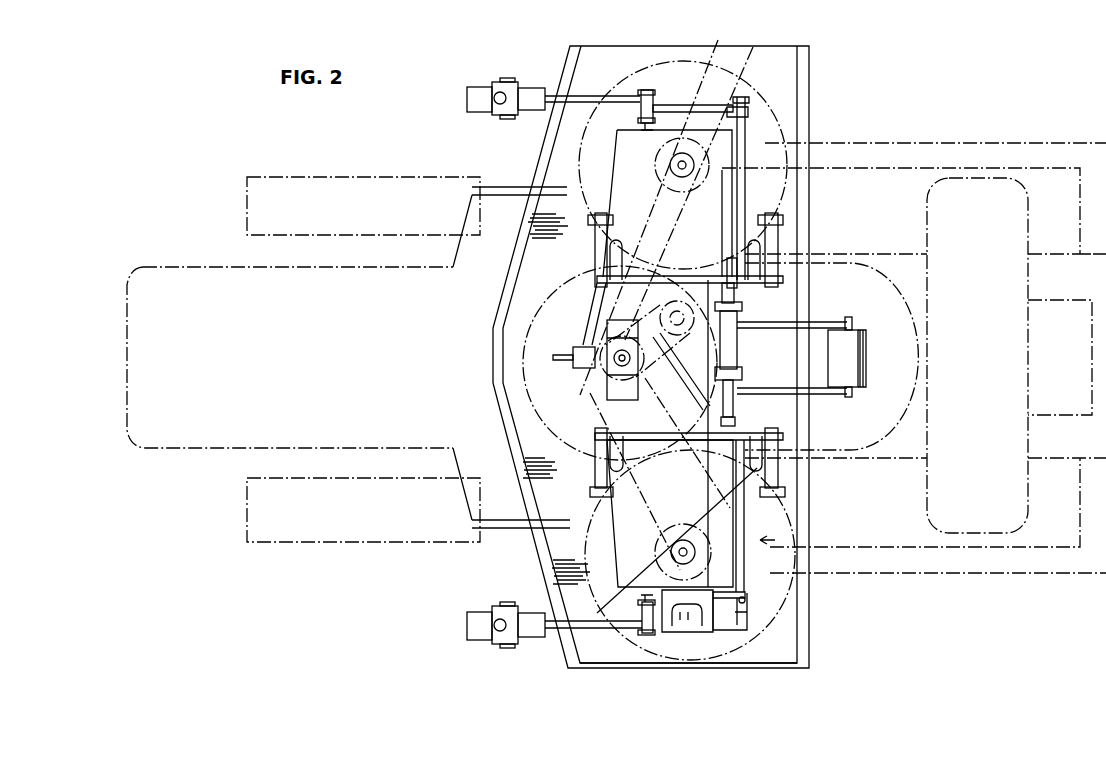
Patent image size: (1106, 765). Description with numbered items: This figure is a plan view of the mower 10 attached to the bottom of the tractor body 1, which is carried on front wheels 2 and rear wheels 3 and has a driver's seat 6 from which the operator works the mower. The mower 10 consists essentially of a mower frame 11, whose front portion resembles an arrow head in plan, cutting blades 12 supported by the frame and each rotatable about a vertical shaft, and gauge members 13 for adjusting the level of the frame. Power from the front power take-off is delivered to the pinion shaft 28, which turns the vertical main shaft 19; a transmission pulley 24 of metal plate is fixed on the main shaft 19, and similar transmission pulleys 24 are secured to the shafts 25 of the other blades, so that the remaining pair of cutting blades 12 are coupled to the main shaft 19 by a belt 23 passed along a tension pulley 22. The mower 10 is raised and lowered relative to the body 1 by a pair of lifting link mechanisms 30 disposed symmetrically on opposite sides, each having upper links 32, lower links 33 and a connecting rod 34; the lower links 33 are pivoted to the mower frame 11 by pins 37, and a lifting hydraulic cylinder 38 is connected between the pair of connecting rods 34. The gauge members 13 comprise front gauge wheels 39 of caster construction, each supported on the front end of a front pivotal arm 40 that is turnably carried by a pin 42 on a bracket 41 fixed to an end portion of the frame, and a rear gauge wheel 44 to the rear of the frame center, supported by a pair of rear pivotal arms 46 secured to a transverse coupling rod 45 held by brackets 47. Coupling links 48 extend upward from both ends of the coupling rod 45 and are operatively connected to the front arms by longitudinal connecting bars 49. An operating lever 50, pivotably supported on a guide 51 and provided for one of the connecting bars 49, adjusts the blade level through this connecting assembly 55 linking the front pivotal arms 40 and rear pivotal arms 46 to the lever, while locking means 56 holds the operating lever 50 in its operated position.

The body 1 is at (224, 260).
The front wheels 2 is at (345, 176).
The rear wheels 3 is at (920, 143).
The driver's seat 6 is at (866, 275).
The mower 10 is at (498, 424).
The mower frame 11 is at (530, 256).
The cutting blades 12 is at (712, 52).
The gauge members 13 is at (459, 103).
The main shaft 19 is at (606, 398).
The tension pulley 22 is at (677, 335).
The belt 23 is at (590, 300).
The transmission pulley 24 is at (656, 174).
The shafts 25 is at (662, 162).
The pinion shaft 28 is at (562, 366).
The lifting link mechanisms 30 is at (790, 254).
The upper links 32 is at (620, 255).
The lower links 33 is at (598, 236).
The connecting rod 34 is at (650, 283).
The pins 37 is at (606, 222).
The lifting hydraulic cylinder 38 is at (745, 349).
The front gauge wheels 39 is at (480, 87).
The front pivotal arm 40 is at (556, 95).
The bracket 41 is at (646, 92).
The pin 42 is at (646, 126).
The rear gauge wheel 44 is at (860, 365).
The coupling rod 45 is at (746, 578).
The rear pivotal arms 46 is at (847, 317).
The brackets 47 is at (750, 102).
The coupling links 48 is at (750, 110).
The connecting bars 49 is at (693, 110).
The operating lever 50 is at (670, 630).
The guide 51 is at (746, 601).
The connecting assembly 55 is at (800, 535).
The locking means 56 is at (701, 625).